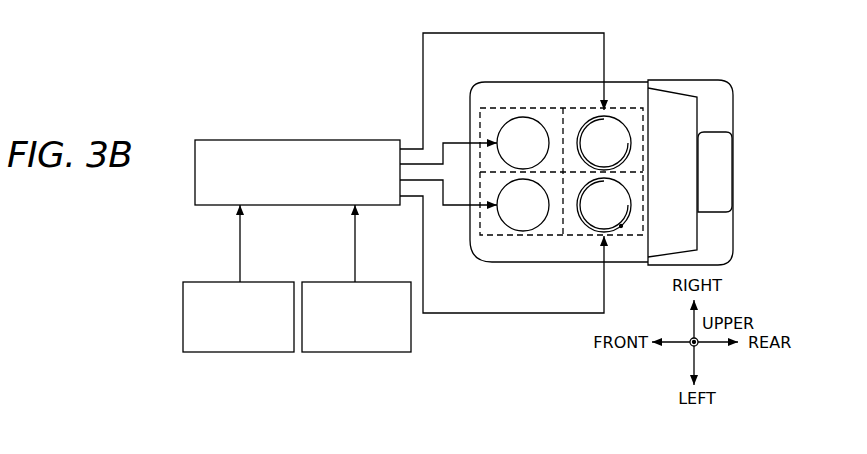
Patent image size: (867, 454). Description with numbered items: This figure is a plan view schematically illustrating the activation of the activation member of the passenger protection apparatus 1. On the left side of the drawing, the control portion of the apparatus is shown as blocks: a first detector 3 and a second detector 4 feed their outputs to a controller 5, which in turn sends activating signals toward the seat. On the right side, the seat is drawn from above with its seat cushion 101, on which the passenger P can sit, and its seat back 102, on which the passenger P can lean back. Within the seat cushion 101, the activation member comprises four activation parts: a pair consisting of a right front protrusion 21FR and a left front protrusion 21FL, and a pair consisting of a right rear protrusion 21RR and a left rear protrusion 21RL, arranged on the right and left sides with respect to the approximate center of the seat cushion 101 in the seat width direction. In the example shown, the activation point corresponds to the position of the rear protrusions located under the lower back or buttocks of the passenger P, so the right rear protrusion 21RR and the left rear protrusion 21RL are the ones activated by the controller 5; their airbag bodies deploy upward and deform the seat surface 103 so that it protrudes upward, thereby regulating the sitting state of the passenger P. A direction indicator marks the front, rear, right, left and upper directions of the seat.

The passenger protection apparatus 1 is at (392, 93).
The first detector 3 is at (240, 353).
The second detector 4 is at (367, 353).
The controller 5 is at (272, 140).
The seat cushion 101 is at (475, 82).
The seat back 102 is at (680, 80).
The seat surface 103 is at (472, 242).
The left front protrusion 21FL is at (533, 110).
The right front protrusion 21FR is at (515, 236).
The left rear protrusion 21RL is at (622, 103).
The right rear protrusion 21RR is at (575, 240).
The passenger P is at (623, 228).